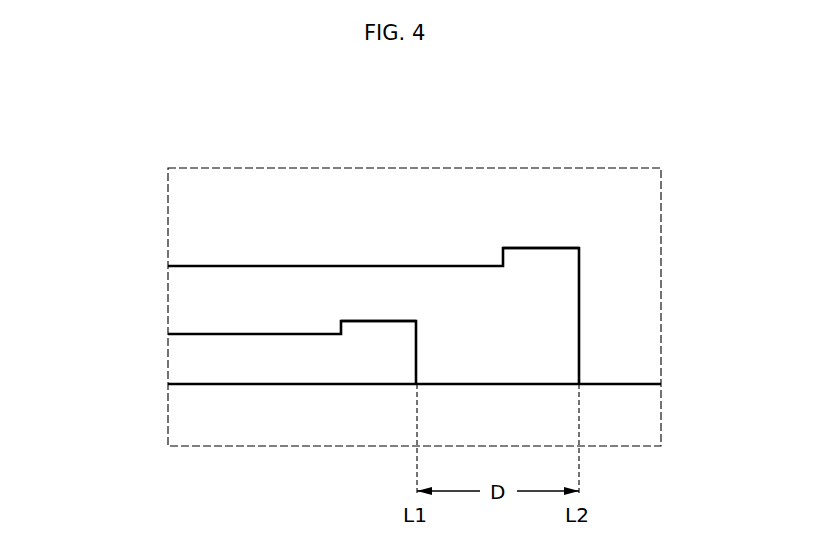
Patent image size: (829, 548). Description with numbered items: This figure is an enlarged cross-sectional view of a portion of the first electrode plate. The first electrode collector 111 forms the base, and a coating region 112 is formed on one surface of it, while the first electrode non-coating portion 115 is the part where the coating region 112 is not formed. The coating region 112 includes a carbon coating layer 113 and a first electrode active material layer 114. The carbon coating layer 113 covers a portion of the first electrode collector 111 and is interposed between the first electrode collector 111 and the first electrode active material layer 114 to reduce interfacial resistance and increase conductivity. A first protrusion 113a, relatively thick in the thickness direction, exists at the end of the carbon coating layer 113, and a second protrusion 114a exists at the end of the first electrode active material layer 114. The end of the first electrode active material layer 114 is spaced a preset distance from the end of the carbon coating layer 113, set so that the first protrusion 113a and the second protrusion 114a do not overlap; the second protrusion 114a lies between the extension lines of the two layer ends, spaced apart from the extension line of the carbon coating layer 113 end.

The first electrode collector 111 is at (178, 421).
The coating region 112 is at (75, 302).
The carbon coating layer 113 is at (178, 360).
The first protrusion 113a is at (381, 328).
The first electrode active material layer 114 is at (176, 305).
The second protrusion 114a is at (540, 255).
The first electrode non-coating portion 115 is at (632, 383).